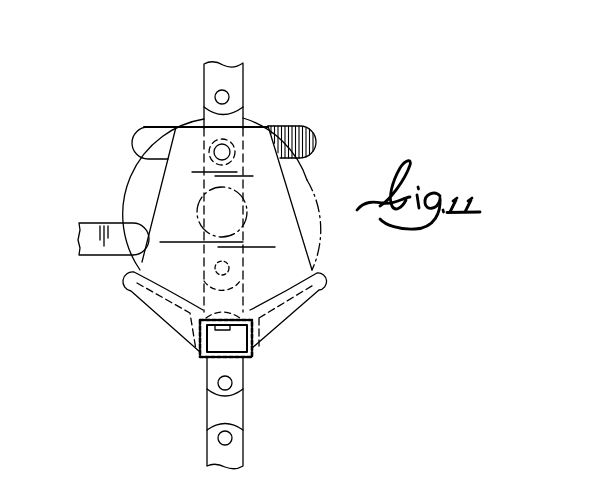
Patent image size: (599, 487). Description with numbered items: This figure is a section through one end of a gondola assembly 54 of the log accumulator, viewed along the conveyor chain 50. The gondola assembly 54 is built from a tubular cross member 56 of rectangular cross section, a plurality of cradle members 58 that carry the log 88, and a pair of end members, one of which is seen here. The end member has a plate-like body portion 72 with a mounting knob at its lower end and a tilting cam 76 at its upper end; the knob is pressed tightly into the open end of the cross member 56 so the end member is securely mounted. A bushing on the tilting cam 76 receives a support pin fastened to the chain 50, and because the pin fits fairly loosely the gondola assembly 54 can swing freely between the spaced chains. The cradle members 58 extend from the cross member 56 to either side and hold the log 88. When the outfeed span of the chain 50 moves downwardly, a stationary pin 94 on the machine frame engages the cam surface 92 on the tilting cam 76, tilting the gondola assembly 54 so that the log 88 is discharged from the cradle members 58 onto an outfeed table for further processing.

The chain 50 is at (228, 73).
The gondola assembly 54 is at (313, 325).
The tubular cross member 56 is at (210, 360).
The cradle member 58 is at (133, 300).
The plate-like body portion 72 is at (176, 191).
The tilting cam 76 is at (299, 128).
The log 88 is at (303, 183).
The cam surface 92 is at (172, 162).
The stationary pin 94 is at (79, 238).